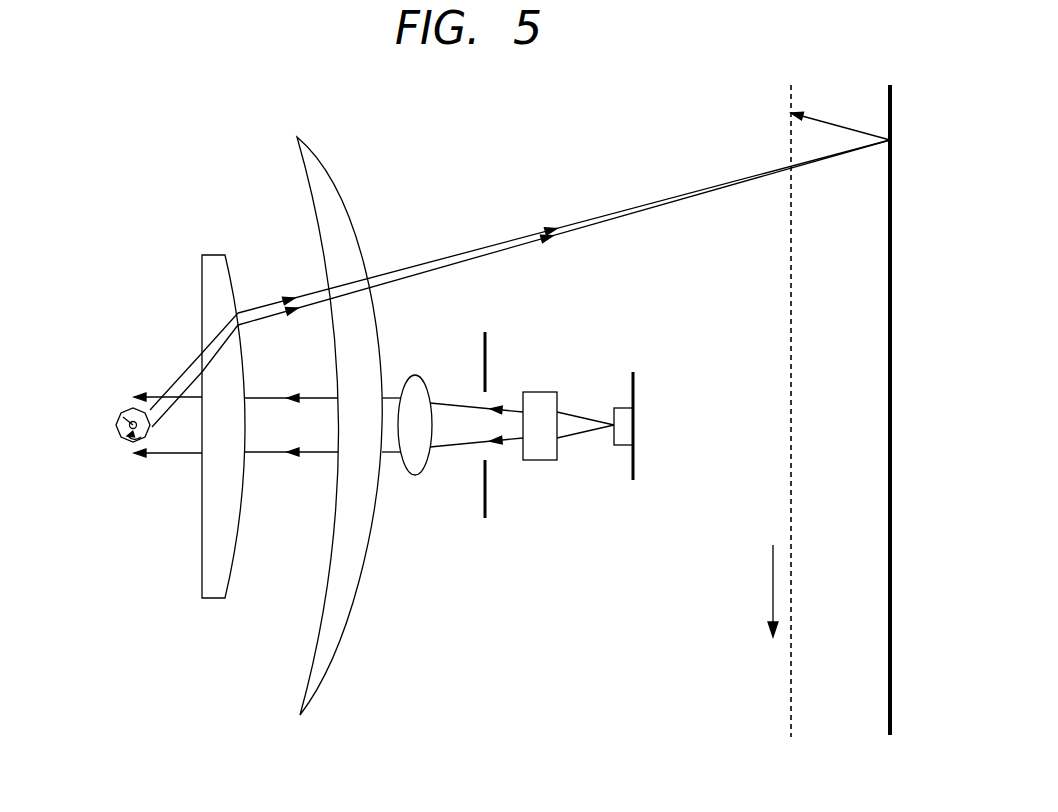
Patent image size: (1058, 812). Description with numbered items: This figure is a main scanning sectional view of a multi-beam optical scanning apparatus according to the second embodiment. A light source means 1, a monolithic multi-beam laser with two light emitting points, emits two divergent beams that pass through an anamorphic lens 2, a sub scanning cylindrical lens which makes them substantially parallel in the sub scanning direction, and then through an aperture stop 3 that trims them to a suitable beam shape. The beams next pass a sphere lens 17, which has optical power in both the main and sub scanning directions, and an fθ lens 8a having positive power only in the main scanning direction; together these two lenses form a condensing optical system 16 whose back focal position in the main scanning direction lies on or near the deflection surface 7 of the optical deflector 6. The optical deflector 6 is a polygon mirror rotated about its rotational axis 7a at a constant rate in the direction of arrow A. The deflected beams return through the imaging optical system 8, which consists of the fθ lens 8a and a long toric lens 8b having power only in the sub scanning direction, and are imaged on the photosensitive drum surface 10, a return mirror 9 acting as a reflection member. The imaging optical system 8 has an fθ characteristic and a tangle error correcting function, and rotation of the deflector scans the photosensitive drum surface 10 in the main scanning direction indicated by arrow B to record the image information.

The light source means 1 is at (633, 375).
The anamorphic lens 2 is at (537, 460).
The aperture stop 3 is at (485, 350).
The optical deflector 6 is at (108, 416).
The deflection surface 7 is at (160, 405).
The rotational axis 7a is at (129, 421).
The imaging optical system 8 is at (398, 118).
The fθ lens 8a is at (211, 255).
The long toric lens 8b is at (347, 233).
The return mirror 9 is at (890, 707).
The photosensitive drum surface 10 is at (791, 710).
The condensing optical system 16 is at (213, 745).
The sphere lens 17 is at (428, 475).
The rotation direction arrow A is at (123, 442).
The main scanning direction arrow B is at (773, 588).